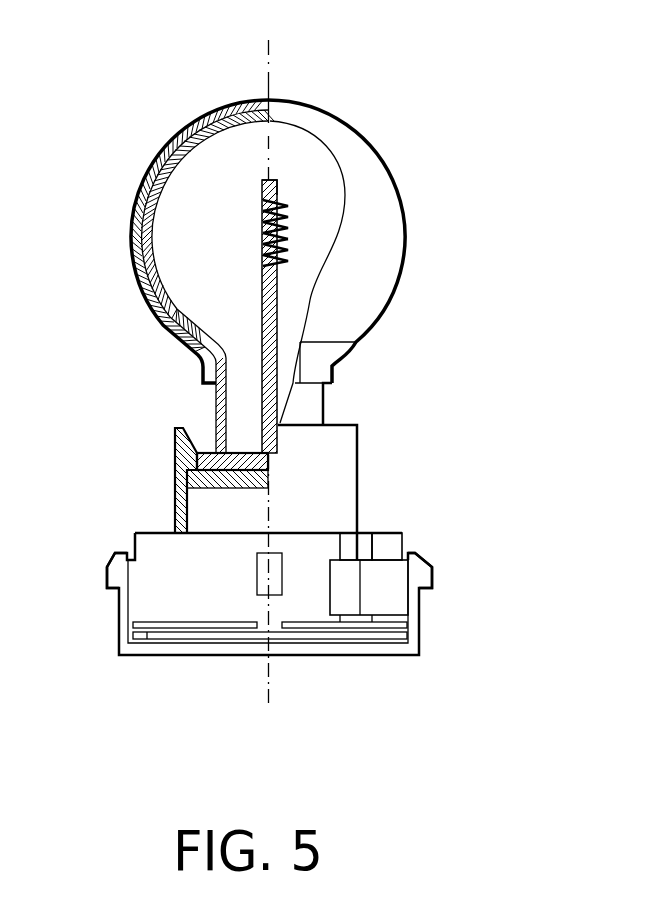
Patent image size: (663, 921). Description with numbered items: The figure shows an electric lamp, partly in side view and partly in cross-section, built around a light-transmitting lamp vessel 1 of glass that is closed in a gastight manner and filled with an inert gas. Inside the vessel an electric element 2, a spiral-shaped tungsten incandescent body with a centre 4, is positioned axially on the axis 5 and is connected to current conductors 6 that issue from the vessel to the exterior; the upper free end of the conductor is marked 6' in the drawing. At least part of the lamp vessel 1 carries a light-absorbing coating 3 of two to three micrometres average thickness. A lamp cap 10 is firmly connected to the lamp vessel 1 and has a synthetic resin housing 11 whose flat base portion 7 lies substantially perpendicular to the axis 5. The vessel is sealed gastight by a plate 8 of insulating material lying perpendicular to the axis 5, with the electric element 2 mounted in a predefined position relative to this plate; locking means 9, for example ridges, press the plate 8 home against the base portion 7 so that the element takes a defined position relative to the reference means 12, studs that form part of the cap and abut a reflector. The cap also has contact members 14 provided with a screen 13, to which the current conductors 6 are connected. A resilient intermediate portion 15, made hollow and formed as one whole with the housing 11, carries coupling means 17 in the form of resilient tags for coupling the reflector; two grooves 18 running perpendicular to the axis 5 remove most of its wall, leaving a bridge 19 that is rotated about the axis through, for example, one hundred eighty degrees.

The lamp vessel 1 is at (150, 238).
The electric element 2 is at (260, 262).
The light-absorbing coating 3 is at (140, 187).
The centre of the incandescent body 4 is at (262, 227).
The axis 5 is at (270, 374).
The current conductors 6 is at (242, 316).
The free end of support rod 6' is at (239, 181).
The base portion 7 is at (260, 480).
The plate 8 is at (270, 463).
The locking means 9 is at (176, 440).
The lamp cap 10 is at (419, 458).
The housing 11 is at (150, 532).
The reference means 12 is at (257, 572).
The screen 13 is at (387, 608).
The contact members 14 is at (367, 560).
The resilient intermediate portion 15 is at (157, 633).
The coupling means 17 is at (125, 623).
The grooves 18 is at (225, 638).
The bridge 19 is at (395, 638).